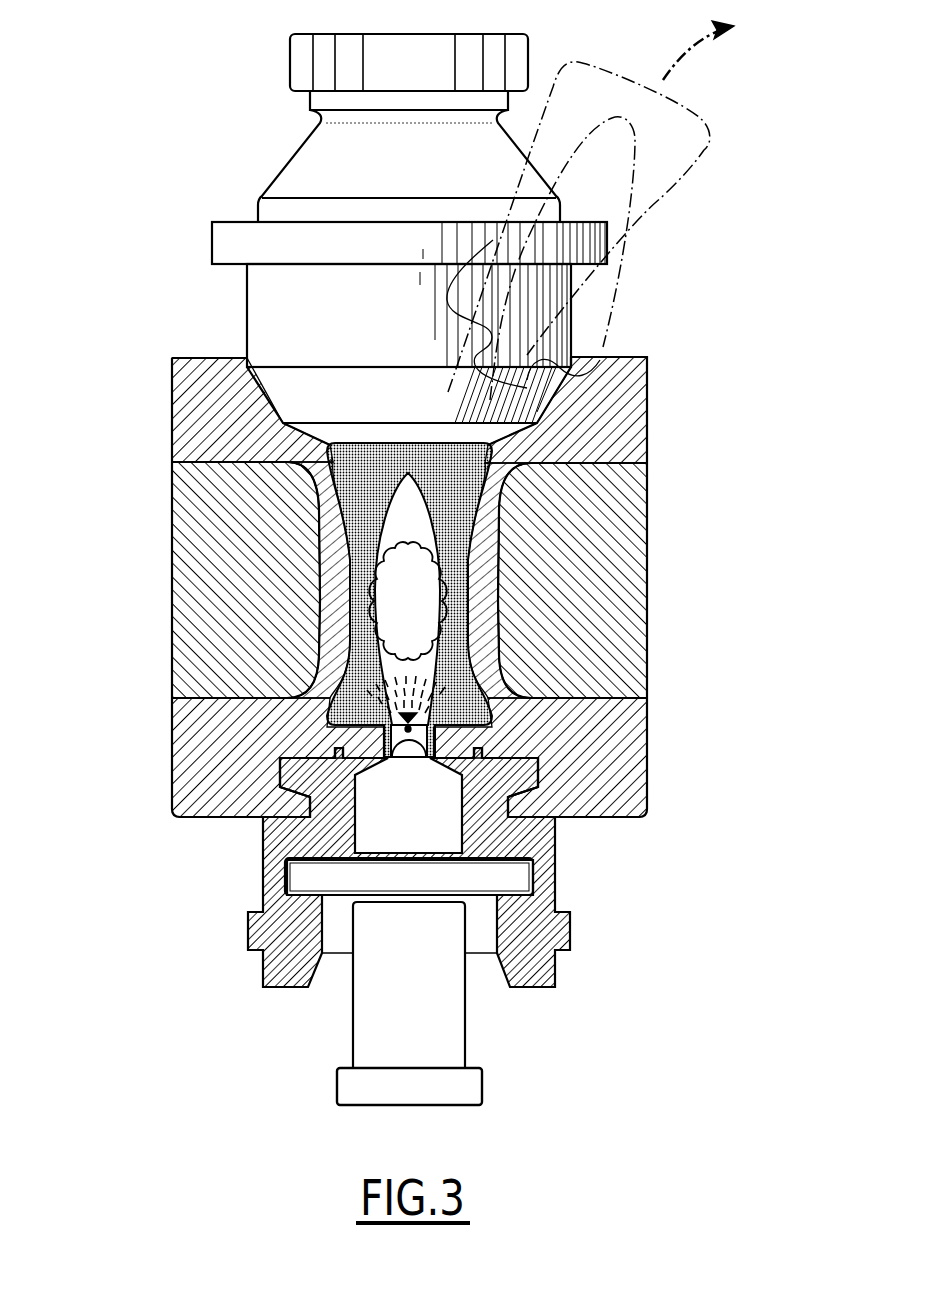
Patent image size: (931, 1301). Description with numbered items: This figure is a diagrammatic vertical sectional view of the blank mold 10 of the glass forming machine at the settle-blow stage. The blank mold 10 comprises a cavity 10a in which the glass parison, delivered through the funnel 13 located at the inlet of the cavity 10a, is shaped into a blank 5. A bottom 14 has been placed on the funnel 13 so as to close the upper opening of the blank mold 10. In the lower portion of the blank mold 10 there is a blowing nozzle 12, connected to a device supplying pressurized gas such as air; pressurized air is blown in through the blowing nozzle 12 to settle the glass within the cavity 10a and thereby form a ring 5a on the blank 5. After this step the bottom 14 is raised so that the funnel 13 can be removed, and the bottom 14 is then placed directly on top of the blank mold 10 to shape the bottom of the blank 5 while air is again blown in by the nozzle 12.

The blank 5 is at (645, 188).
The ring 5a is at (385, 727).
The blank mold 10 is at (673, 520).
The cavity 10a is at (355, 482).
The blowing nozzle 12 is at (433, 942).
The funnel 13 is at (267, 322).
The bottom 14 is at (325, 170).